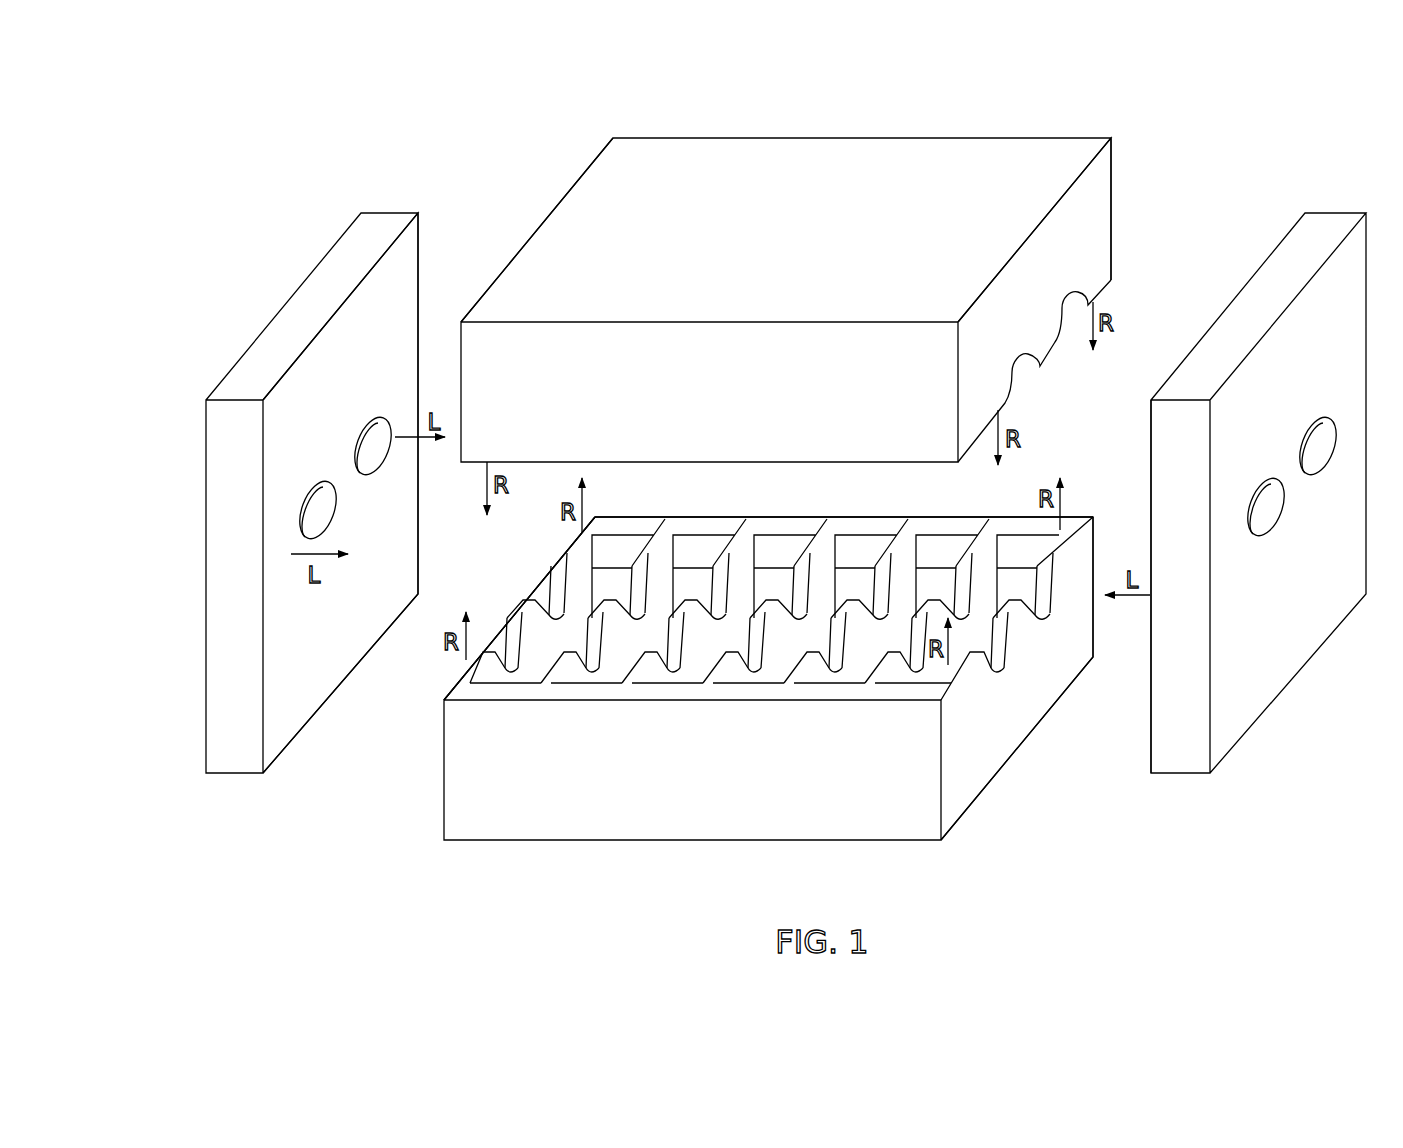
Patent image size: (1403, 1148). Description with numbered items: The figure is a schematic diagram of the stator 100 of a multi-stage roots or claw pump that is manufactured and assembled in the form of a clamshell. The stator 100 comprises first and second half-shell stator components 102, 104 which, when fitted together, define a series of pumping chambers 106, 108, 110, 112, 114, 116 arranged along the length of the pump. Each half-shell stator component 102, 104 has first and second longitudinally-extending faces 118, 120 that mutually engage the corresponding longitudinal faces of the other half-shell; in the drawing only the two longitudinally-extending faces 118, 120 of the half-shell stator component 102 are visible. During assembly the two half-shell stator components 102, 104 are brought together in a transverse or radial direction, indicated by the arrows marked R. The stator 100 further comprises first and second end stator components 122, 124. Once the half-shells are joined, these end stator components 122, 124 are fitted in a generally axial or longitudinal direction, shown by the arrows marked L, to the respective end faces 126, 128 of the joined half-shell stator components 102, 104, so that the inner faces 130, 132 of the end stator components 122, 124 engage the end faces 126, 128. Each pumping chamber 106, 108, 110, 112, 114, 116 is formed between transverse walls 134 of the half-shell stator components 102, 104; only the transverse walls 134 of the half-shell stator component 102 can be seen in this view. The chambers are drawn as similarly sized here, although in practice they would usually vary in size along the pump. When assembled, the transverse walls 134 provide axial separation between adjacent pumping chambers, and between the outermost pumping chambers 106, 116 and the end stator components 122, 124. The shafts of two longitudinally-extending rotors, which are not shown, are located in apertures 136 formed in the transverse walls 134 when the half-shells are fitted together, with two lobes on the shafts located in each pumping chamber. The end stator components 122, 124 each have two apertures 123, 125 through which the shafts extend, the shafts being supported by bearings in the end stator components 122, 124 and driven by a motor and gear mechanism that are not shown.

The stator 100 is at (1046, 91).
The first half-shell stator component 102 is at (651, 795).
The second half-shell stator component 104 is at (765, 240).
The pumping chamber 106 is at (628, 568).
The pumping chamber 108 is at (709, 568).
The pumping chamber 110 is at (790, 568).
The pumping chamber 112 is at (871, 568).
The pumping chamber 114 is at (952, 568).
The pumping chamber 116 is at (1045, 567).
The first longitudinally-extending face 118 is at (647, 693).
The second longitudinally-extending face 120 is at (803, 528).
The first end stator component 122 is at (214, 597).
The aperture 123 is at (357, 441).
The second end stator component 124 is at (1158, 593).
The aperture 125 is at (1325, 469).
The end face 126 is at (1088, 193).
The end face 128 is at (555, 207).
The inner face 130 is at (298, 691).
The inner face 132 is at (1238, 287).
The transverse walls 134 is at (732, 545).
The apertures 136 is at (758, 672).